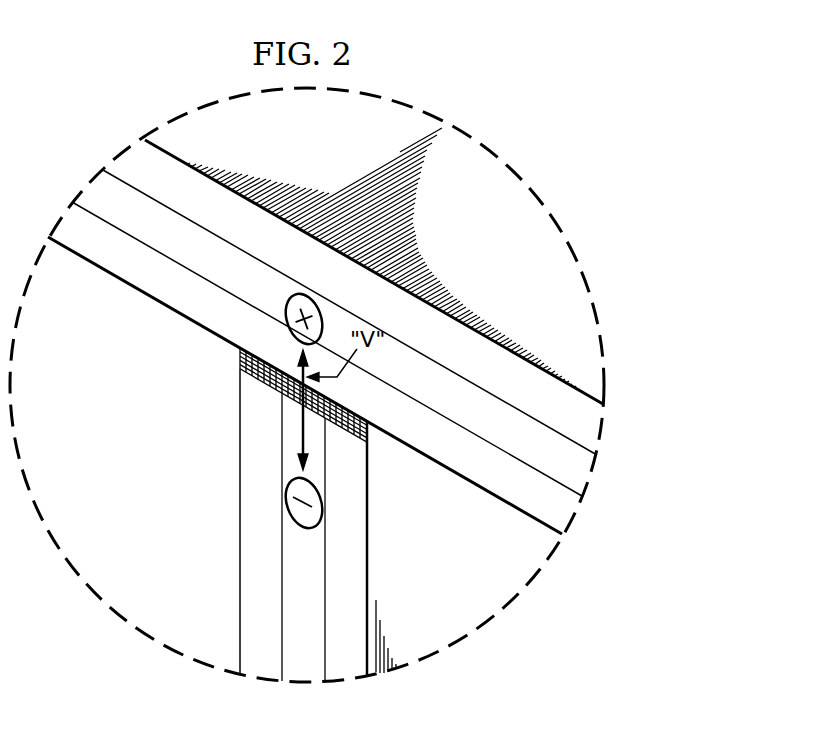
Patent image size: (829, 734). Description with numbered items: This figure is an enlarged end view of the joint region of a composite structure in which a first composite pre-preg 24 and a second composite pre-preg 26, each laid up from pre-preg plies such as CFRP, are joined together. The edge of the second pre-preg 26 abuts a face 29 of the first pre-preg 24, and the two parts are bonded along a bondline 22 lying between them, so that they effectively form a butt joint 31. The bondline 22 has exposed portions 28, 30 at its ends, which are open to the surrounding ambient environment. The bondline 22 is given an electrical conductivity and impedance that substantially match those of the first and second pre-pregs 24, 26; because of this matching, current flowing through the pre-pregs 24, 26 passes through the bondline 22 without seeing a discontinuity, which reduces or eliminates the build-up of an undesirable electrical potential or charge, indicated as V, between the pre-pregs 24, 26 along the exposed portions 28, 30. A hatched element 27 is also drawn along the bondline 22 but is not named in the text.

The bondline 22 is at (350, 437).
The first composite pre-preg 24 is at (101, 243).
The second composite pre-preg 26 is at (267, 564).
The bond layer 27 is at (258, 398).
The exposed portion 28 is at (218, 360).
The face 29 is at (512, 527).
The exposed portion 30 is at (410, 462).
The butt joint 31 is at (152, 420).